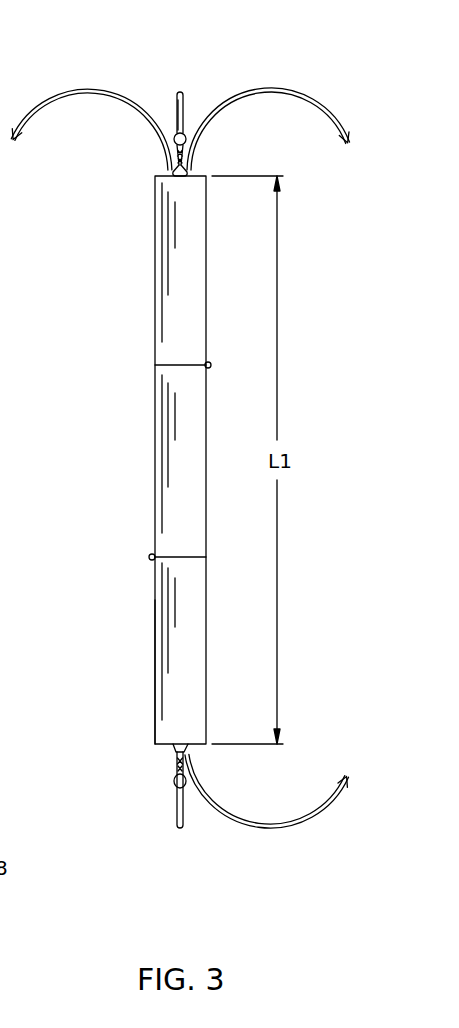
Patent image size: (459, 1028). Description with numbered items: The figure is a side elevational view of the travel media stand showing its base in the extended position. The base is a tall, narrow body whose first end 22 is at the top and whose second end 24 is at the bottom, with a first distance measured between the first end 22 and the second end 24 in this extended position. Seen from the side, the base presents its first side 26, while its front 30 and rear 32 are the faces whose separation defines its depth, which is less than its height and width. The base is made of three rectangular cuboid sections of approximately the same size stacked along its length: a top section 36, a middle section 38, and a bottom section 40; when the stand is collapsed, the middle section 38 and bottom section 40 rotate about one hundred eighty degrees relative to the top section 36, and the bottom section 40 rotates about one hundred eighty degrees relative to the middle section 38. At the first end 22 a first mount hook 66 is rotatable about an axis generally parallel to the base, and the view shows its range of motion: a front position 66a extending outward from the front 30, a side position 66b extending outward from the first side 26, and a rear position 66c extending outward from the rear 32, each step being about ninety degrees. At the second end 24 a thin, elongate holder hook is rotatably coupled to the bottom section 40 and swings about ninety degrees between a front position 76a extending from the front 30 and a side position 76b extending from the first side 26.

The first end 22 is at (197, 175).
The second end 24 is at (162, 747).
The first side 26 is at (193, 328).
The front 30 is at (206, 272).
The rear 32 is at (155, 223).
The top section 36 is at (165, 278).
The middle section 38 is at (168, 477).
The bottom section 40 is at (178, 638).
The first mount hook 66 is at (178, 93).
The front position 66a is at (293, 97).
The side position 66b is at (185, 108).
The rear position 66c is at (65, 96).
The front position 76a is at (267, 833).
The side position 76b is at (177, 820).